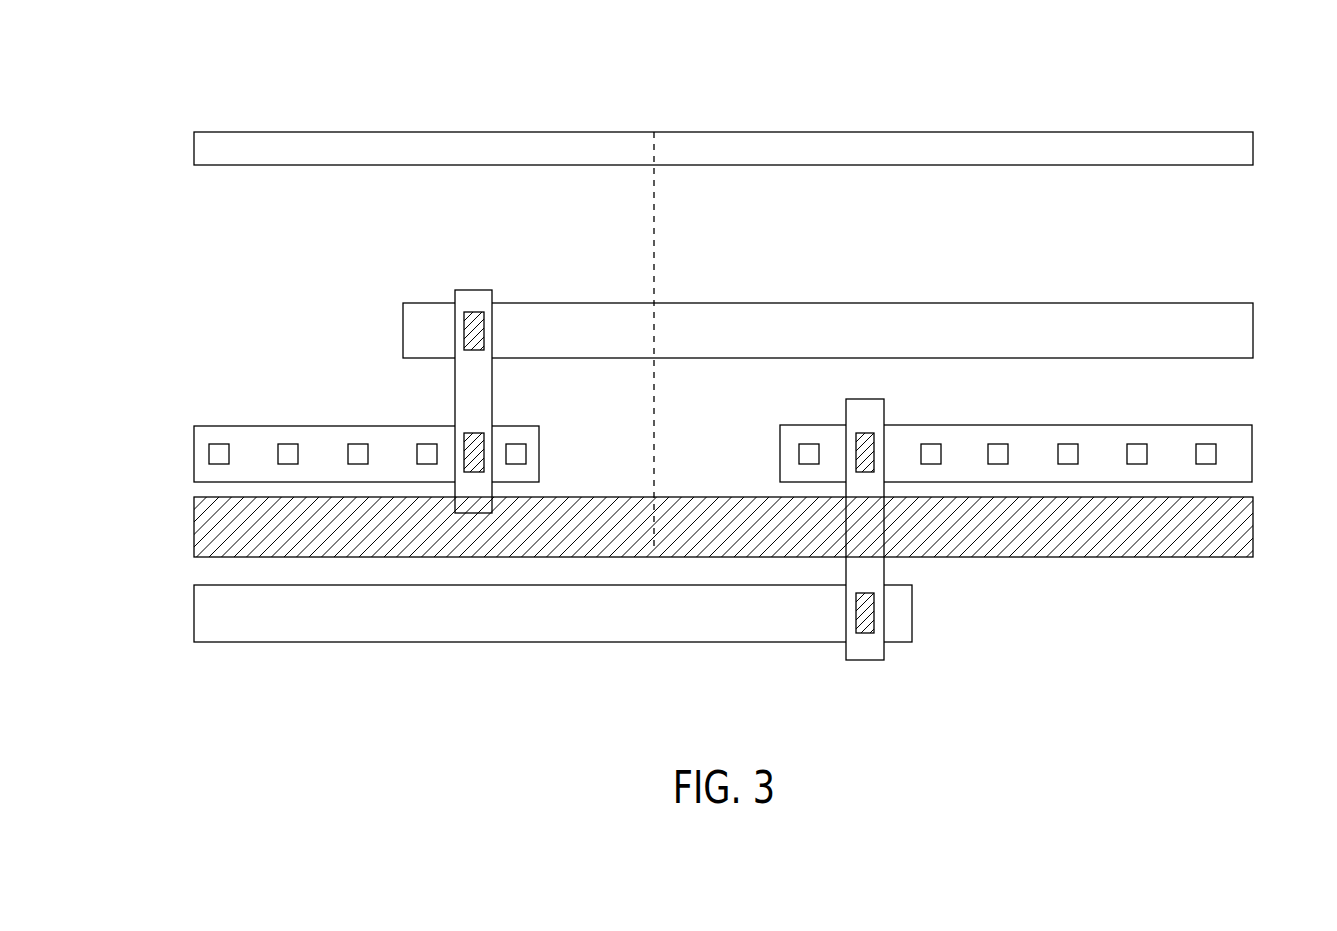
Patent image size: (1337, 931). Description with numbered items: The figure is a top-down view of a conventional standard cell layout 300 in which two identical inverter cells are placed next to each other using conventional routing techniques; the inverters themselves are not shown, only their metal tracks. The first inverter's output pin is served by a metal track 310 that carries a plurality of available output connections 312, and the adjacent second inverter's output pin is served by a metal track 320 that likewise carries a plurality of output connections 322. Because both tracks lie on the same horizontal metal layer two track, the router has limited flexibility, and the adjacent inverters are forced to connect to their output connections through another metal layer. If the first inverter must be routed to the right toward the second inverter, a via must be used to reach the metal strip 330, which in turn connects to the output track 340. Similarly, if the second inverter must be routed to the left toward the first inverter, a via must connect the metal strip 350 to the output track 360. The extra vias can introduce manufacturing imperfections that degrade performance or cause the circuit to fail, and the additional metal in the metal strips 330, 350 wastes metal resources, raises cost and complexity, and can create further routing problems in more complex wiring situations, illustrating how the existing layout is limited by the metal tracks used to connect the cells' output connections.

The display device / touch panel assembly 300 is at (1078, 96).
The metal track 310 is at (193, 440).
The output connections 312 is at (219, 444).
The metal track 320 is at (1242, 438).
The output connections 322 is at (931, 444).
The metal strip 330 is at (494, 398).
The output track 340 is at (840, 312).
The metal strip 350 is at (845, 652).
The output track 360 is at (193, 607).